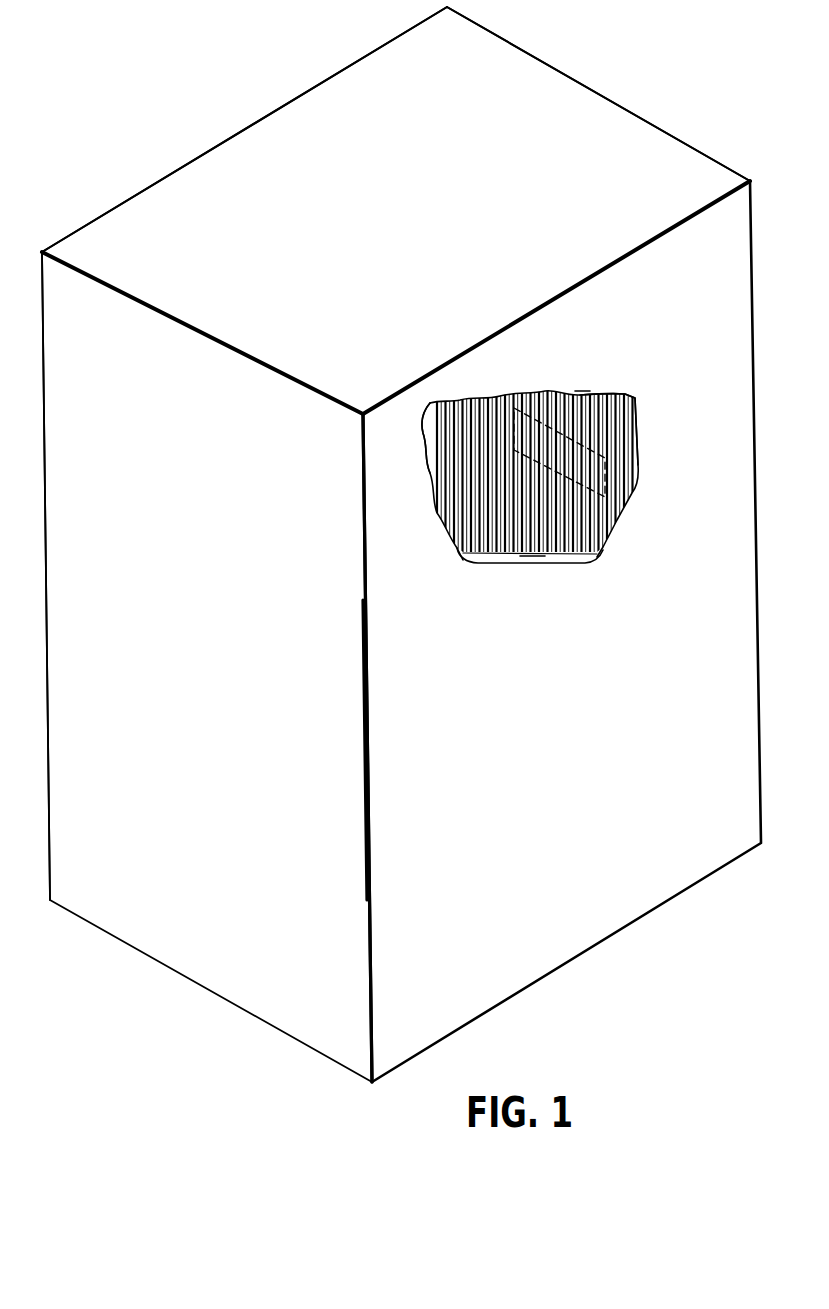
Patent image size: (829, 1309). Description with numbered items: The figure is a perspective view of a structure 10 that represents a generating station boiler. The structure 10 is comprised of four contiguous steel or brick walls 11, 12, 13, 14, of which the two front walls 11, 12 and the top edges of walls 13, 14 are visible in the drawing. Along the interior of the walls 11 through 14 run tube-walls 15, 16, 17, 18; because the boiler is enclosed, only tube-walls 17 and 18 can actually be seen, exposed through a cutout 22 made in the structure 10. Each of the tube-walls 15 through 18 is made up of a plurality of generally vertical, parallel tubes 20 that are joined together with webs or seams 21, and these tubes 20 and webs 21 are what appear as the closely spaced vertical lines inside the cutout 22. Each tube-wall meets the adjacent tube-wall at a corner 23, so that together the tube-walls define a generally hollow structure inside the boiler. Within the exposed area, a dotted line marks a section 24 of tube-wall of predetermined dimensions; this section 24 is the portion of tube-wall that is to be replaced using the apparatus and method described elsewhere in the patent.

The structure 10 is at (232, 79).
The wall 11 is at (570, 762).
The wall 12 is at (172, 660).
The wall 13 is at (132, 195).
The wall 14 is at (665, 128).
The tube-wall 15 is at (530, 557).
The tube-wall 16 is at (316, 747).
The tube-wall 17 is at (433, 405).
The tube-wall 18 is at (582, 396).
The tubes 20 is at (561, 397).
The webs or seams 21 is at (600, 392).
The cutout 22 is at (493, 564).
The corner 23 is at (455, 400).
The section of tube-wall 24 is at (585, 457).